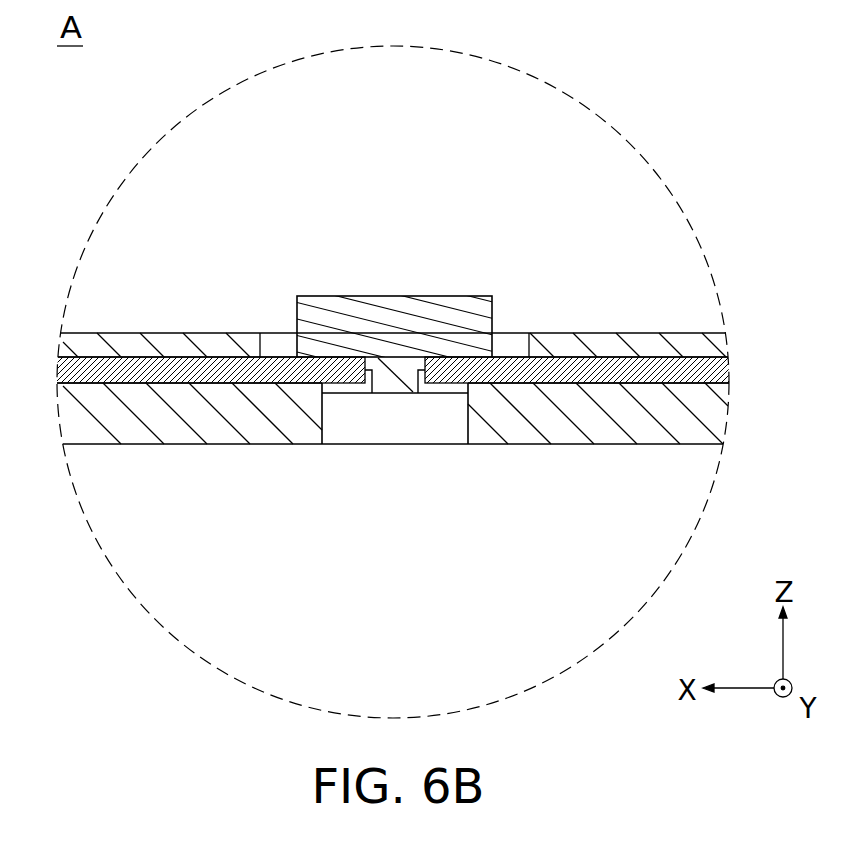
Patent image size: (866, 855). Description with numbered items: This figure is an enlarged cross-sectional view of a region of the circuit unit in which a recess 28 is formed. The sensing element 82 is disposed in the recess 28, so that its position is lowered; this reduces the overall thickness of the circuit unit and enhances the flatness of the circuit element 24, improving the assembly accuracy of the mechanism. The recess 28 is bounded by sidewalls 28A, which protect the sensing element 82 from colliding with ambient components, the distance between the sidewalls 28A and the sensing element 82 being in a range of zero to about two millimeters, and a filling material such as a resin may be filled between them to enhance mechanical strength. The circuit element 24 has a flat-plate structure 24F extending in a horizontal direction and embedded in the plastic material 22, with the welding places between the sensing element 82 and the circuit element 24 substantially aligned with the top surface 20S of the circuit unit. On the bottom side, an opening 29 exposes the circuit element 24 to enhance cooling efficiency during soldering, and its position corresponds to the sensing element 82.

The top surface 20S is at (627, 333).
The plastic material 22 is at (147, 412).
The circuit element 24 is at (392, 372).
The flat-plate structure 24F is at (174, 372).
The recess 28 is at (421, 434).
The sidewalls 28A is at (262, 346).
The opening 29 is at (395, 420).
The sensing element 82 is at (396, 322).